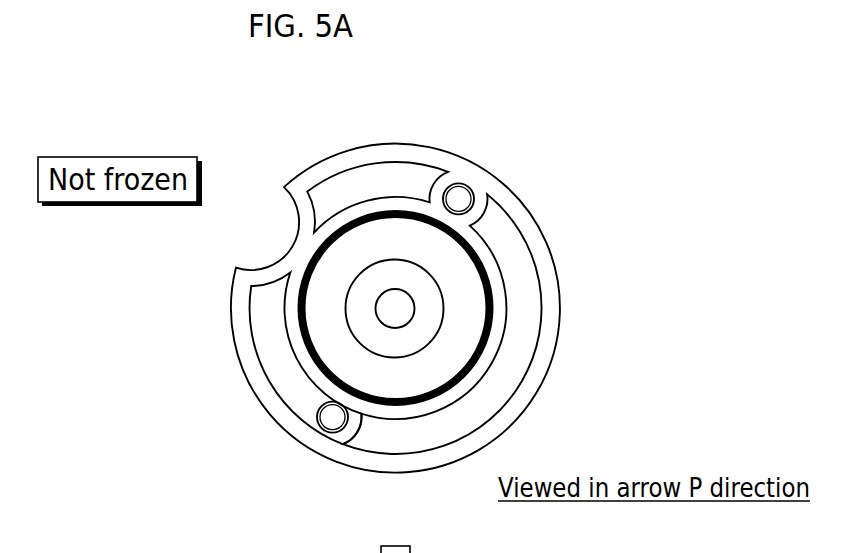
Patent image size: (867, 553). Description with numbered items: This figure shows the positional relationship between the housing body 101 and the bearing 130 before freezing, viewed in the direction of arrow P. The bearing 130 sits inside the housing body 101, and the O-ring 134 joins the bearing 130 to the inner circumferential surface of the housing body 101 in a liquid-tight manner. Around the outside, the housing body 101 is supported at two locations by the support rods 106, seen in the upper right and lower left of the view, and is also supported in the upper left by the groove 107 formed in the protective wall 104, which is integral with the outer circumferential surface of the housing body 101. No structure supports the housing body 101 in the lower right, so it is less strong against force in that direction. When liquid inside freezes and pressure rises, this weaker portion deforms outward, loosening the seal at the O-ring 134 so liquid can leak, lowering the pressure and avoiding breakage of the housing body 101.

The housing body 101 is at (493, 253).
The protective wall 104 is at (234, 350).
The support rod 106 is at (444, 186).
The groove 107 is at (310, 212).
The bearing 130 is at (467, 307).
The O-ring 134 is at (488, 340).